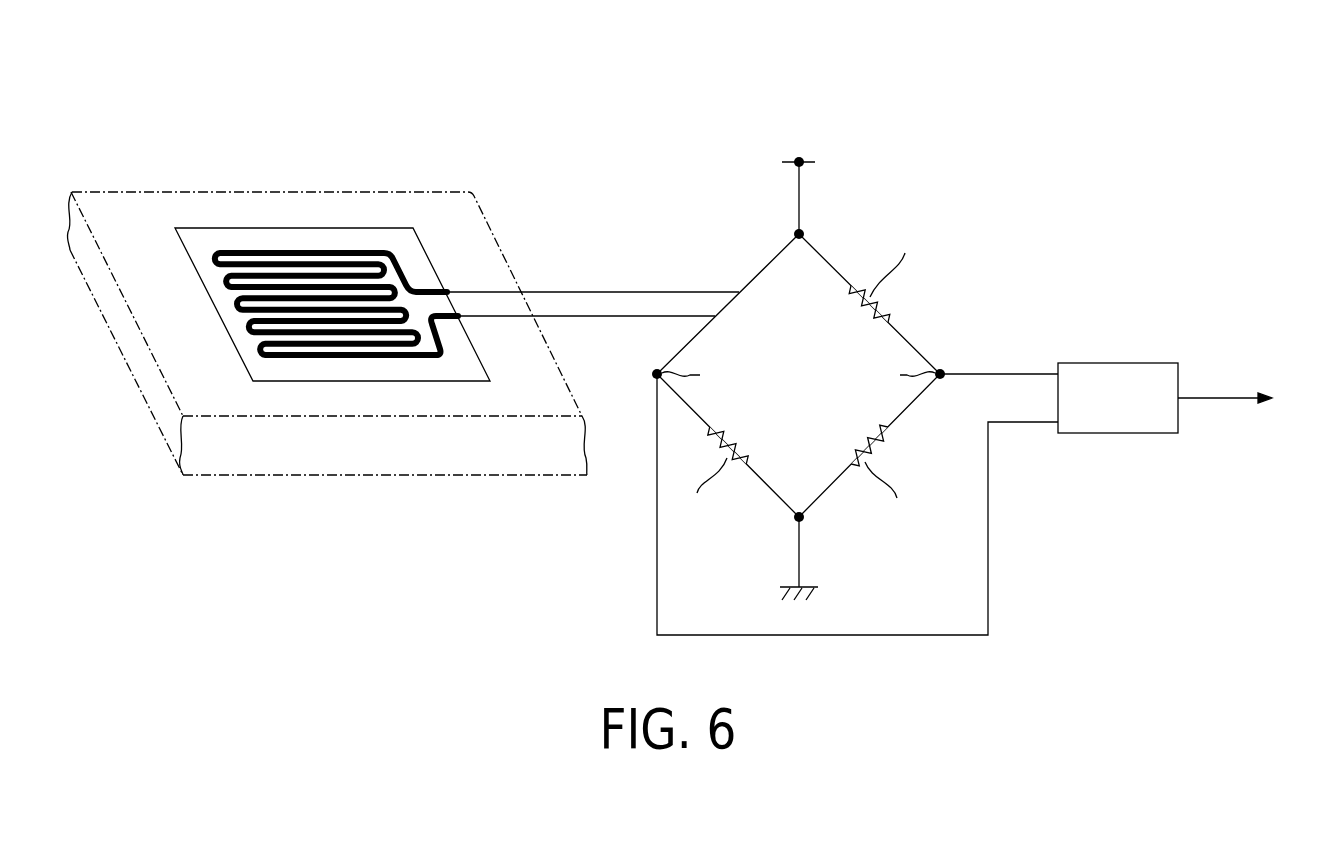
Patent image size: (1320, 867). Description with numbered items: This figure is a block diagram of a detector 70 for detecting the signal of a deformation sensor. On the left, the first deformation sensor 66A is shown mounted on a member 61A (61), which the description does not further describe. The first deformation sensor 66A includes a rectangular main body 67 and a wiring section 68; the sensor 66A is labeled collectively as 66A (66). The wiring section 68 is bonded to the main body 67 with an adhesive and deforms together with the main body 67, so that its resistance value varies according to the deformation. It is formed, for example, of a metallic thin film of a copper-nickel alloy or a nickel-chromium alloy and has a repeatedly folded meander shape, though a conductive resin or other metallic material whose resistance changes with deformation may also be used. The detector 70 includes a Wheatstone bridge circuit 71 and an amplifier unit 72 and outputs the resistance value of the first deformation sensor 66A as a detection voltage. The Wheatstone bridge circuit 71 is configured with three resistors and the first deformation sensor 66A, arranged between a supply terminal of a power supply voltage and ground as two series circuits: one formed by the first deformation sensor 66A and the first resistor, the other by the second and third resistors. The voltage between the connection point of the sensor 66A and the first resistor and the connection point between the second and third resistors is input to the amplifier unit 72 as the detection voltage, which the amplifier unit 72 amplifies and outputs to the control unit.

The detection surface (object) 61A is at (137, 192).
The object / measured body 61 is at (327, 279).
The first deformation sensor 66A is at (332, 224).
The strain gauge 66 is at (332, 224).
The main body 67 is at (293, 226).
The wiring section 68 is at (367, 250).
The detector 70 is at (962, 358).
The Wheatstone bridge circuit 71 is at (947, 267).
The amplifier unit 72 is at (1110, 363).